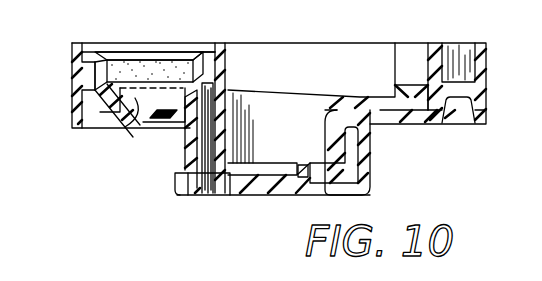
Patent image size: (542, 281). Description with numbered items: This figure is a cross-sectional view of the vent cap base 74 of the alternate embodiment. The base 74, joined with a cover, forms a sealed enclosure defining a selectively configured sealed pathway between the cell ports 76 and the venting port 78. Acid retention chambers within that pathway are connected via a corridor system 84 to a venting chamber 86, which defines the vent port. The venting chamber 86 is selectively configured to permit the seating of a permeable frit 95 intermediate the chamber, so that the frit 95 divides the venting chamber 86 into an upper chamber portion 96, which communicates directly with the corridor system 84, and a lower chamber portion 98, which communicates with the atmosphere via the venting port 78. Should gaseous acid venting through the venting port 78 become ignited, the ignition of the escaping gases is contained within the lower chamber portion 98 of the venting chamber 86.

The base 74 is at (492, 112).
The cell ports 76 is at (237, 151).
The venting port 78 is at (118, 103).
The corridor system 84 is at (448, 47).
The venting chamber 86 is at (178, 13).
The frit 95 is at (110, 70).
The upper chamber portion 96 is at (187, 45).
The lower chamber portion 98 is at (138, 102).